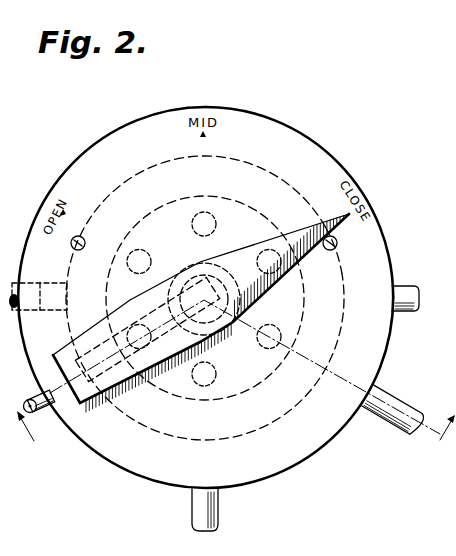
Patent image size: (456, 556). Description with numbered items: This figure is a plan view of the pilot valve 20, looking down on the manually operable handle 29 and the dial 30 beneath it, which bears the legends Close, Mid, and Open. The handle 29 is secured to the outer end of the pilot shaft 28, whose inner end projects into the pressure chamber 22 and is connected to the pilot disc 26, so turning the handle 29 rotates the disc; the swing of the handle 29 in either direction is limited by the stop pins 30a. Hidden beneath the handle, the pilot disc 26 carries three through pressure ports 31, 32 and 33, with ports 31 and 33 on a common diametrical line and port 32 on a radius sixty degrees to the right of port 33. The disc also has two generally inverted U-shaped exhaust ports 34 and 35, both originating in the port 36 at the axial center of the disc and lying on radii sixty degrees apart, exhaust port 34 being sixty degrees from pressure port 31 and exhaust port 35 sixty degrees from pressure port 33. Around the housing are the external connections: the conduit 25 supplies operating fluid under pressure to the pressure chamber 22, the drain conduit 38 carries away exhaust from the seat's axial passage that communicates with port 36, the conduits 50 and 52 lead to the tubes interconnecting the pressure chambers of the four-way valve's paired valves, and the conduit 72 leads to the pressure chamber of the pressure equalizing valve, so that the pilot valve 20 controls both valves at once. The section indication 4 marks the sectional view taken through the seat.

The section line 4- 4 is at (236, 376).
The pilot valve 20 is at (134, 479).
The pressure chamber 22 is at (268, 426).
The conduit 25 is at (13, 284).
The pilot disc 26 is at (281, 365).
The pilot shaft 28 is at (233, 273).
The manually operable handle 29 is at (343, 238).
The dial 30 is at (302, 137).
The stop pins 30a is at (83, 238).
The pressure port 31 is at (217, 219).
The pressure port 32 is at (282, 338).
The pressure port 33 is at (217, 376).
The exhaust port 34 is at (151, 256).
The exhaust port 35 is at (172, 353).
The axial port 36 is at (229, 293).
The drain conduit 38 is at (412, 313).
The conduit 50 is at (381, 427).
The conduit 52 is at (30, 398).
The conduit 72 is at (192, 512).